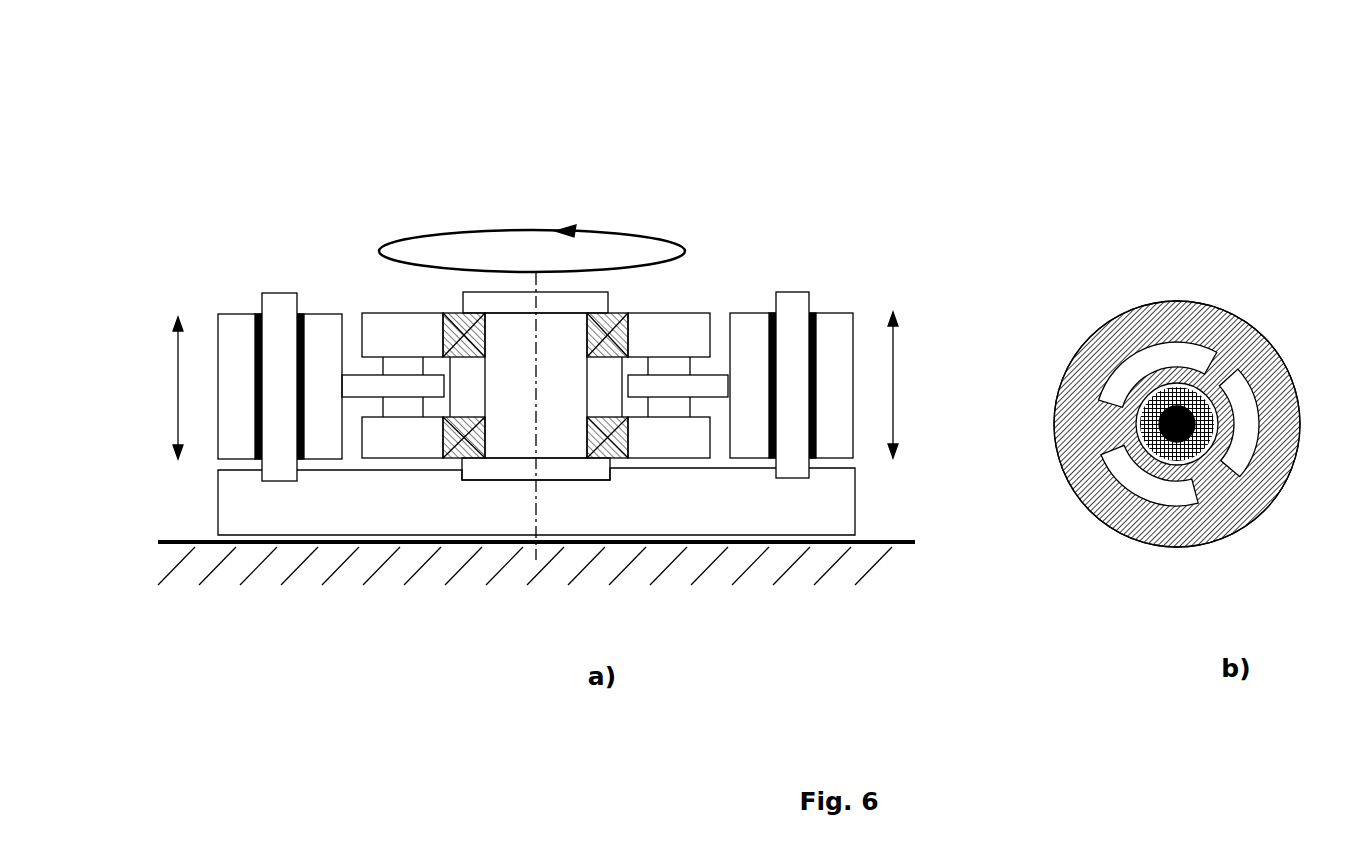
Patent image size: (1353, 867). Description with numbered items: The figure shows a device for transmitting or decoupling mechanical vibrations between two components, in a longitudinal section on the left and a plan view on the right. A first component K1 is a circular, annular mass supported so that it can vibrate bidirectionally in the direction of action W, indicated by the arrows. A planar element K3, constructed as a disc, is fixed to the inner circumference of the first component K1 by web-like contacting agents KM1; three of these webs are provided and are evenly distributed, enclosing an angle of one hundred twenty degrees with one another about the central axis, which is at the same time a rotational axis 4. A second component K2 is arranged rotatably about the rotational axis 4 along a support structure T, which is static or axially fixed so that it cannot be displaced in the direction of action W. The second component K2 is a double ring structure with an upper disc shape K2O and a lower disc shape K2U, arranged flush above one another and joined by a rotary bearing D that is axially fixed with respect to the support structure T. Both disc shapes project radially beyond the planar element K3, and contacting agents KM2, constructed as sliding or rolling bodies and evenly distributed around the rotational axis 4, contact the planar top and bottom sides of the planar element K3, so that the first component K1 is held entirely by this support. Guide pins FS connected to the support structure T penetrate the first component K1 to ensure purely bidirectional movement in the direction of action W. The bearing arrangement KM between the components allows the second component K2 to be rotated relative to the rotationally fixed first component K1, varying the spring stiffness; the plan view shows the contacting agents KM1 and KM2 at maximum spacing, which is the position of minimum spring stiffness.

The rotational axis 4 is at (537, 273).
The bearing / coupling module KM is at (353, 373).
The upper disc shape K2O is at (678, 320).
The lower disc shape K2U is at (668, 447).
The contacting agents KM1 is at (713, 373).
The contacting agents KM2 is at (393, 358).
The first component K1 is at (840, 330).
The second component K2 is at (390, 467).
The planar element K3 is at (665, 380).
The direction of action W is at (535, 385).
The guide pins FS is at (268, 390).
The rotary bearing D is at (465, 462).
The support structure T is at (558, 399).